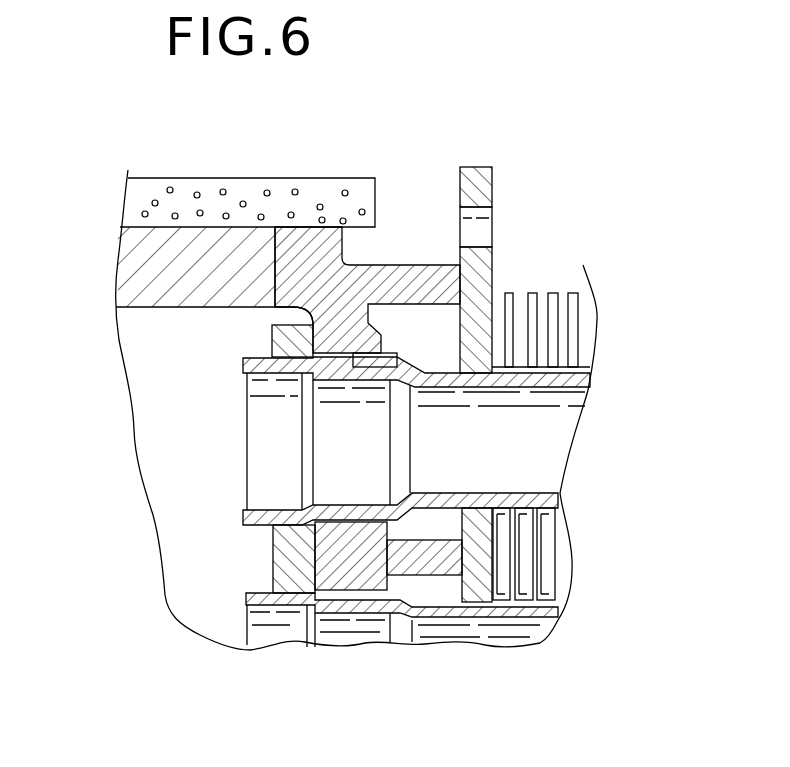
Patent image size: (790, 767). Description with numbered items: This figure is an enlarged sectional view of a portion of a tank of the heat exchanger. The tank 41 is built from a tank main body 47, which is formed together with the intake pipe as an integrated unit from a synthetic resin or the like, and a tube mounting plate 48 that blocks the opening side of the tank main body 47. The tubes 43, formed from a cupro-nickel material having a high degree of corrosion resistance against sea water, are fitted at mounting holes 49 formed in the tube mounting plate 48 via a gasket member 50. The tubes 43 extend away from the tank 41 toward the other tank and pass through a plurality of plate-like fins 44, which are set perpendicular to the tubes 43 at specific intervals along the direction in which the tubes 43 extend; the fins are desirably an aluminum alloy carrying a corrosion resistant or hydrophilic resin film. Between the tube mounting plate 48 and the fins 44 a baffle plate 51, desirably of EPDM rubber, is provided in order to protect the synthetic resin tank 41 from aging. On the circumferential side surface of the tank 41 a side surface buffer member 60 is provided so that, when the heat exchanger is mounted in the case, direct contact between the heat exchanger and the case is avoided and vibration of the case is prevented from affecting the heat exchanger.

The tank 41 is at (244, 250).
The tube 43 is at (517, 418).
The plate-like fin 44 is at (565, 297).
The tank main body 47 is at (188, 278).
The tube mounting plate 48 is at (395, 283).
The mounting hole 49 is at (353, 365).
The gasket member 50 is at (277, 563).
The baffle plate 51 is at (477, 172).
The side surface buffer member 60 is at (187, 198).